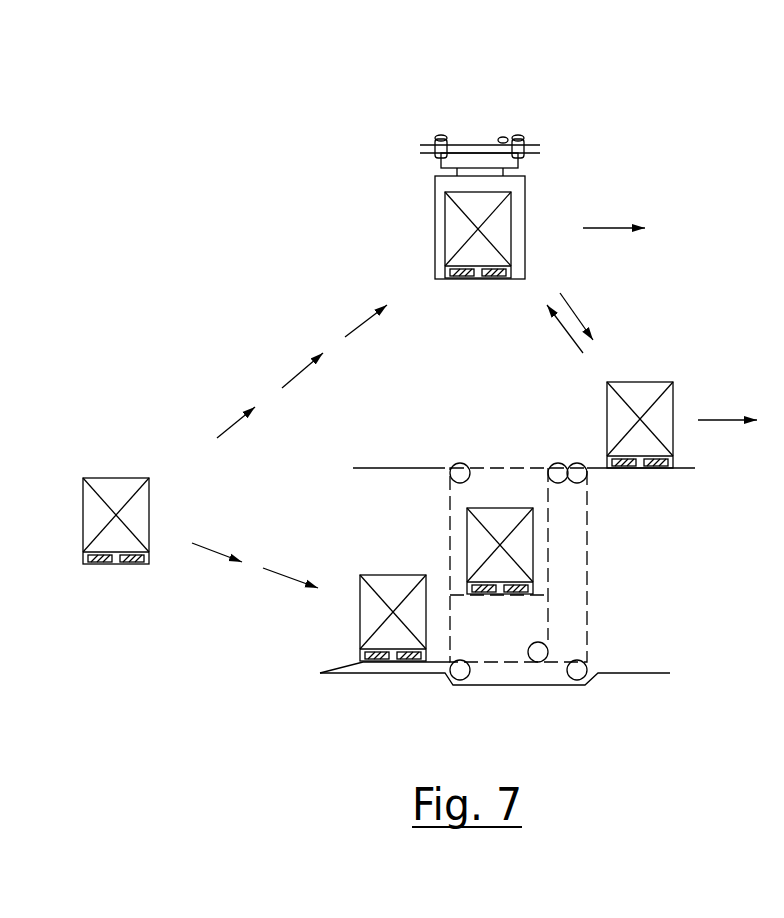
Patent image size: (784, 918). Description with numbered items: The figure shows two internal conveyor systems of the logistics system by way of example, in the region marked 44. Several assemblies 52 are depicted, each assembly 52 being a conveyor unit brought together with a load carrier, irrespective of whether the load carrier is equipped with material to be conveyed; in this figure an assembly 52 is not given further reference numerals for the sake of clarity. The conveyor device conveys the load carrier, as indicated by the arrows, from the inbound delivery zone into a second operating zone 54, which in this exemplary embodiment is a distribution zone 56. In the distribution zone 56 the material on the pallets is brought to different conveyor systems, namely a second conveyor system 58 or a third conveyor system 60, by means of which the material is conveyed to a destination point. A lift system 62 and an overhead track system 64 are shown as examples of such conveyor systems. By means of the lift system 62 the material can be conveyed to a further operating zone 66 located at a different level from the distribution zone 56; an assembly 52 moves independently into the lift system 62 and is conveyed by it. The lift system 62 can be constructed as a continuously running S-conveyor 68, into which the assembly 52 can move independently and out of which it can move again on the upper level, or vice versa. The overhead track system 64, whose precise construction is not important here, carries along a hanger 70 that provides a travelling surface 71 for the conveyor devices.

The conveying system 44 is at (280, 130).
The assembly 52 is at (447, 232).
The second operating zone 54 is at (328, 153).
The distribution zone 56 is at (367, 193).
The second conveyor system 58 is at (672, 578).
The third conveyor system 60 is at (592, 170).
The lift system 62 is at (643, 618).
The overhead track system 64 is at (575, 197).
The further operating zone 66 is at (397, 435).
The S-conveyor 68 is at (518, 697).
The hanger 70 is at (525, 262).
The travelling surface 71 is at (437, 268).